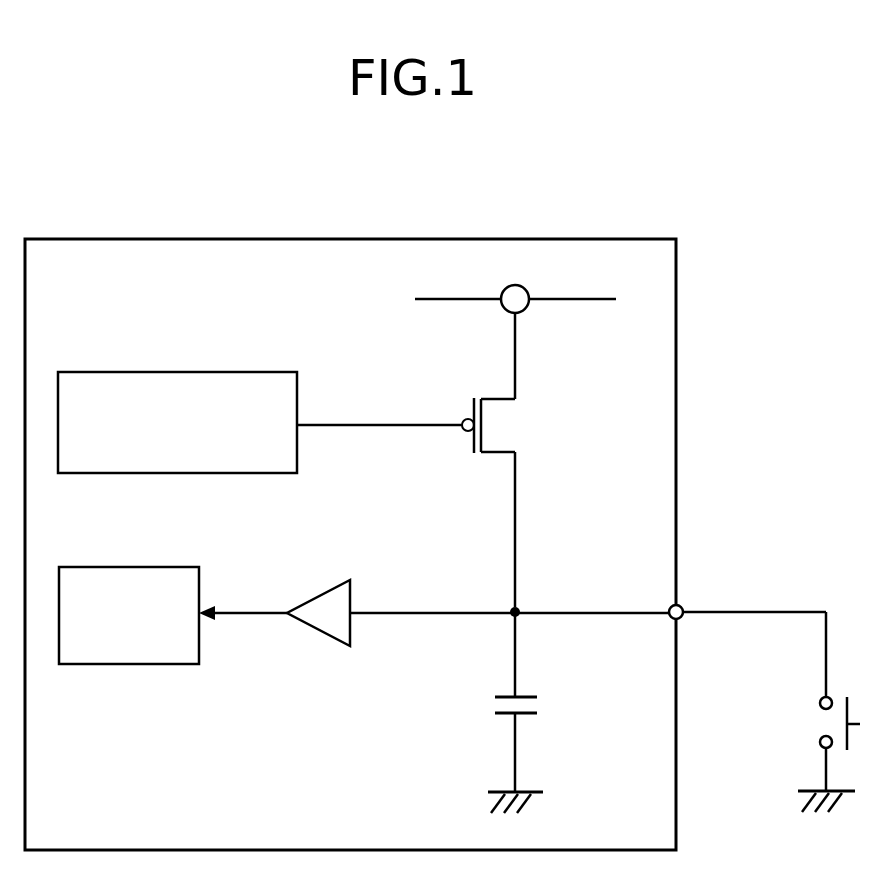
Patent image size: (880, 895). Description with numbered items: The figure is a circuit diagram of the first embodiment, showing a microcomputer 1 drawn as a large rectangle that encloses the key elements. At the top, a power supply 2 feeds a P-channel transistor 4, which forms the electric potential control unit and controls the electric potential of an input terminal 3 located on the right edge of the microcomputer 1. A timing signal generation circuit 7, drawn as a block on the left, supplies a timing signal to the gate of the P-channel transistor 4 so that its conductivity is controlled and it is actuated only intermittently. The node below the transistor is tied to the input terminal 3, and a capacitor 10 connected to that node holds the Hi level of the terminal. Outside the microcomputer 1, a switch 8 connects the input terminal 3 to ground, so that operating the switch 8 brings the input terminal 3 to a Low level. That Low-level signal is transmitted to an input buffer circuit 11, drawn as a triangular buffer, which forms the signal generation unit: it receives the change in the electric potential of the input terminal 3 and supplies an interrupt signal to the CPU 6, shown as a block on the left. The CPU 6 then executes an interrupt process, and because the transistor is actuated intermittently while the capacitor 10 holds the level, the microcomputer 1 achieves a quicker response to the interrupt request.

The microcomputer 1 is at (635, 240).
The power supply 2 is at (528, 286).
The input terminal 3 is at (685, 606).
The P-channel transistor 4 is at (497, 427).
The CPU 6 is at (174, 567).
The timing signal generation circuit 7 is at (268, 373).
The switch 8 is at (815, 725).
The capacitor 10 is at (530, 714).
The input buffer circuit 11 is at (310, 594).